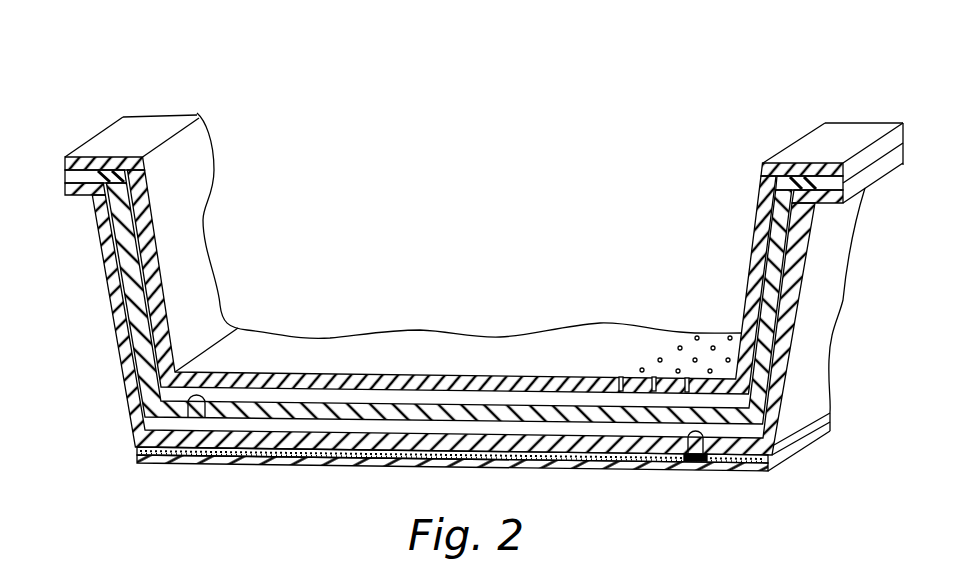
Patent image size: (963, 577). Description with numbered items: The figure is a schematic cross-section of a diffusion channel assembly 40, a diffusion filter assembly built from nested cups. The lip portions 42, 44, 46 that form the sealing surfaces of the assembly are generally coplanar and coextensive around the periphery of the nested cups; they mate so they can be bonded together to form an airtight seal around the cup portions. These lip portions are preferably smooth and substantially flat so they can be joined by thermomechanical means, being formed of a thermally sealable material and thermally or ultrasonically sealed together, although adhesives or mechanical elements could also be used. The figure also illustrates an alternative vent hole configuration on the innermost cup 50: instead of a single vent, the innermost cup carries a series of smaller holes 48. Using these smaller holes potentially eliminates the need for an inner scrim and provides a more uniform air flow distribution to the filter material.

The diffusion channel assembly 40 is at (710, 80).
The lip portion 42 is at (87, 192).
The lip portion 44 is at (90, 177).
The lip portion 46 is at (80, 167).
The smaller holes 48 is at (711, 349).
The innermost cup 50 is at (768, 210).